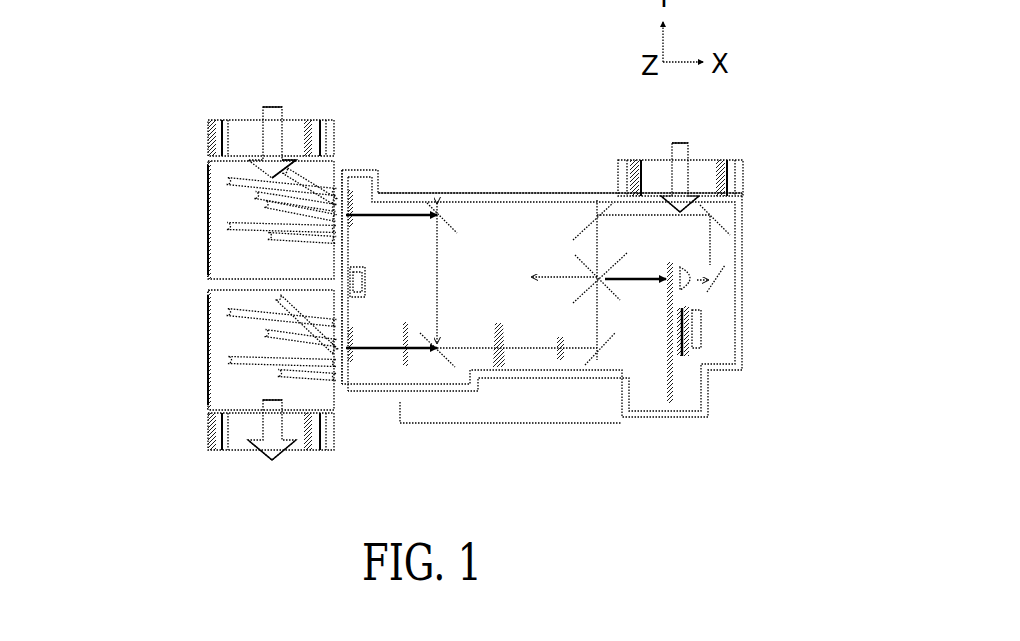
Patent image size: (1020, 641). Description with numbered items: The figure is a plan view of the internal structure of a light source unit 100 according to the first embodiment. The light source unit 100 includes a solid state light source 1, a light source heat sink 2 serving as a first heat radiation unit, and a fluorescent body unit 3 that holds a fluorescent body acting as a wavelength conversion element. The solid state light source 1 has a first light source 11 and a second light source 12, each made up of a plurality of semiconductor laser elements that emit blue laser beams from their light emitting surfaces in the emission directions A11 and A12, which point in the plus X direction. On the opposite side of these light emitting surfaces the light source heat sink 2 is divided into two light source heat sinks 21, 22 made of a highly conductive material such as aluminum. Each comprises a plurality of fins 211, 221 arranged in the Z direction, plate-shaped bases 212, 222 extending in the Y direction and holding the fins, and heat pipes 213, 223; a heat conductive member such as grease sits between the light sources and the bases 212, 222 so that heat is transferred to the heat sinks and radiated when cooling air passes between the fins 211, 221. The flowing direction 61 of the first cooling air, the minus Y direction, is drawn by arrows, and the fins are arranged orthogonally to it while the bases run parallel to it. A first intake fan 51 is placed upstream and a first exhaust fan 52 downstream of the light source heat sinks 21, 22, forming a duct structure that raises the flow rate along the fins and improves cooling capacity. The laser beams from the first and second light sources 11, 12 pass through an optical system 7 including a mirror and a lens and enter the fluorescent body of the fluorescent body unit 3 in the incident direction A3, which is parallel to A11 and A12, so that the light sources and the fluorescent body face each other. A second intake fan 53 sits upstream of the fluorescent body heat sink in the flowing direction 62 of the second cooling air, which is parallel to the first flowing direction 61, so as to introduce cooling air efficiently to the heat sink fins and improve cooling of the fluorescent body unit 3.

The light source unit 100 is at (218, 44).
The solid state light source 1 is at (513, 103).
The light source heat sink 2 is at (140, 242).
The fluorescent body unit 3 is at (690, 375).
The optical system 7 is at (530, 423).
The first light source 11 is at (353, 340).
The second light source 12 is at (368, 185).
The light source heat sink 21 is at (213, 317).
The light source heat sink 22 is at (222, 228).
The first intake fan 51 is at (218, 128).
The first exhaust fan 52 is at (213, 437).
The second intake fan 53 is at (657, 163).
The flowing direction of the first cooling air 61 is at (280, 125).
The flowing direction of the second cooling air 62 is at (687, 150).
The fins 211 is at (217, 383).
The base 212 is at (342, 383).
The heat pipes 213 is at (298, 365).
The fins 221 is at (213, 193).
The base 222 is at (340, 173).
The heat pipes 223 is at (300, 197).
The emission direction A11 is at (392, 350).
The emission direction A12 is at (407, 215).
The incident direction A3 is at (630, 287).